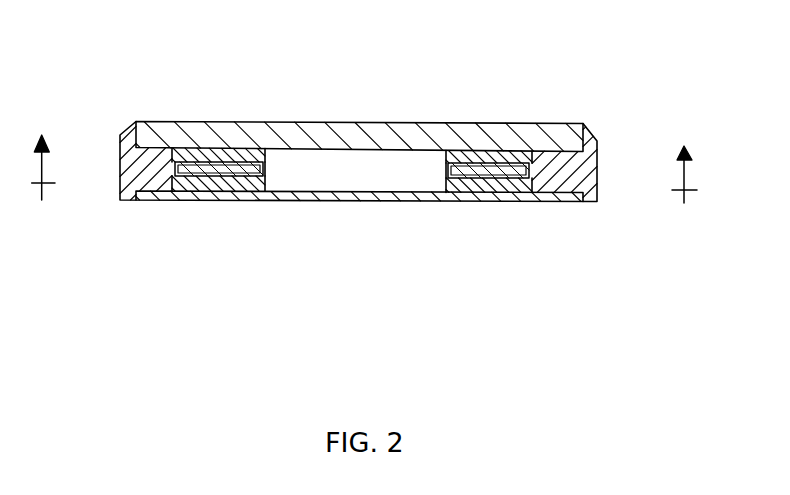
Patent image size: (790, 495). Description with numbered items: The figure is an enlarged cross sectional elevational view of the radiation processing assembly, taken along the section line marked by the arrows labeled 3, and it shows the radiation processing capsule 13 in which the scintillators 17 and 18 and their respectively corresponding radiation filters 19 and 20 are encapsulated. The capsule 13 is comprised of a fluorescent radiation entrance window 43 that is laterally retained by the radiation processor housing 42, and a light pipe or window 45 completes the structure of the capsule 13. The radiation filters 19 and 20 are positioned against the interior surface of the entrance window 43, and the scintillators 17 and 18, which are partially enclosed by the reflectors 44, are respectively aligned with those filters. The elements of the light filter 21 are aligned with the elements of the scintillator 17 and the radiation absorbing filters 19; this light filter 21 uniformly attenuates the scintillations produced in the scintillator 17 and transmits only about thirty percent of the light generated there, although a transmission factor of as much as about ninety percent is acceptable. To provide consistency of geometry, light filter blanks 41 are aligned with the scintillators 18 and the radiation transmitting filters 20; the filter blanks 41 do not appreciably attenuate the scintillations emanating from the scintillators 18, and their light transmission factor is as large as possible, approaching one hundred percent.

The radiation processing capsule 13 is at (610, 117).
The scintillator 17 is at (208, 190).
The scintillator 18 is at (477, 178).
The radiation absorbing filter 19 is at (238, 187).
The radiation transmitting filter 20 is at (513, 188).
The light filter 21 is at (210, 155).
The light filter blank 41 is at (513, 152).
The radiation processor housing 42 is at (118, 162).
The fluorescent radiation entrance window 43 is at (333, 199).
The reflector 44 is at (425, 152).
The light pipe or window 45 is at (425, 138).
The section line for FIG. 3 is at (364, 181).